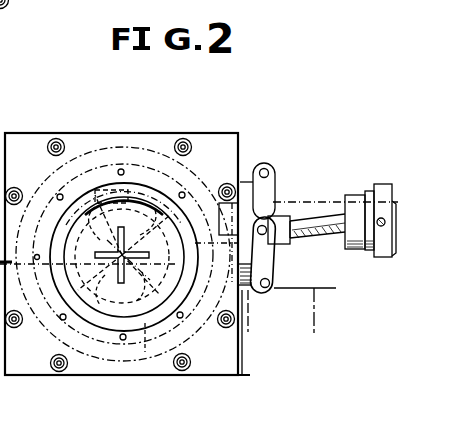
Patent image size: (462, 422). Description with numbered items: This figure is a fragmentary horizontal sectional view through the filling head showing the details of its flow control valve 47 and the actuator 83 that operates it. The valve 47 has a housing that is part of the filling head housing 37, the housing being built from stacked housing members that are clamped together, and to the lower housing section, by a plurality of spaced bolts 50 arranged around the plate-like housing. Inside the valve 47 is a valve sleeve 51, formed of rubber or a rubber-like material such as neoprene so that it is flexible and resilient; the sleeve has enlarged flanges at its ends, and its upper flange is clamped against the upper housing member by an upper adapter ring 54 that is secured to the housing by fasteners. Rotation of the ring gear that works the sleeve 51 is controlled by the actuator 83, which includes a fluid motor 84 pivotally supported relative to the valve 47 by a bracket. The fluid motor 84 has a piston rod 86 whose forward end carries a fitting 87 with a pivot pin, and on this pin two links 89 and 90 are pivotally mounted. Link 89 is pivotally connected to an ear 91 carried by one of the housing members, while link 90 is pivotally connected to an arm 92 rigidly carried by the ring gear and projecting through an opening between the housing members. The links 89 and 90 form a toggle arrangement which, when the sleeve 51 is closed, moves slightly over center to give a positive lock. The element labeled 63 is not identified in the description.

The housing 37 is at (218, 146).
The flow control valve 47 is at (219, 377).
The bolts 50 is at (63, 371).
The valve sleeve 51 is at (147, 206).
The upper adapter ring 54 is at (85, 213).
The shutter blades 63 is at (64, 304).
The actuator 83 is at (365, 258).
The fluid motor 84 is at (353, 190).
The piston rod 86 is at (322, 215).
The fitting 87 is at (284, 216).
The link 89 is at (276, 214).
The link 90 is at (274, 259).
The ear 91 is at (264, 162).
The arm 92 is at (250, 294).